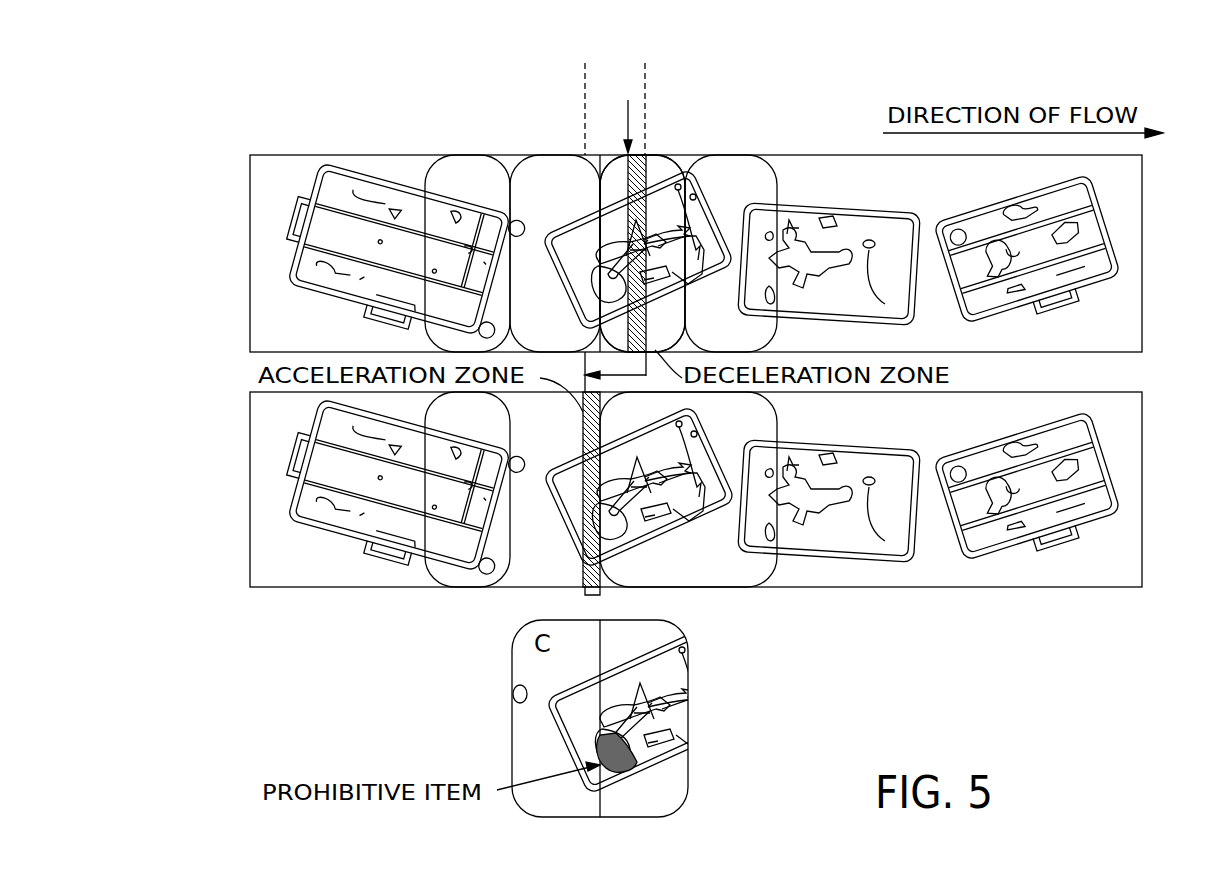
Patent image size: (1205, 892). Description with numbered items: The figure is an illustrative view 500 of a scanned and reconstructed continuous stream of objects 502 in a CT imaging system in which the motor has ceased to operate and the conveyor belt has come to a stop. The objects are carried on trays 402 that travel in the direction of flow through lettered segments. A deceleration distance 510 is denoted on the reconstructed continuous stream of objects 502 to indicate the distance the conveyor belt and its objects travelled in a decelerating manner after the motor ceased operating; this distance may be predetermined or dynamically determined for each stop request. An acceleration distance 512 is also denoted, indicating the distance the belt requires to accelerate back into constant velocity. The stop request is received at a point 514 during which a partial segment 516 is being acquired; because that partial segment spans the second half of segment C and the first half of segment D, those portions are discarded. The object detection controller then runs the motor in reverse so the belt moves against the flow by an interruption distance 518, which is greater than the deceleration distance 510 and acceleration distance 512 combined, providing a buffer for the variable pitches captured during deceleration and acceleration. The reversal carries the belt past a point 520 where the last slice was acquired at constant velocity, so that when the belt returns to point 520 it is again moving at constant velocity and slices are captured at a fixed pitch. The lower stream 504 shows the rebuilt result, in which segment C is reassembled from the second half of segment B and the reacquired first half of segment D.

The tray 402 is at (420, 172).
The illustrative view 500 is at (1108, 84).
The scanned and reconstructed continuous stream of objects 502 is at (238, 155).
The second conveyor state 504 is at (238, 392).
The deceleration distance 510 is at (637, 153).
The acceleration distance 512 is at (597, 593).
The point 514 is at (620, 111).
The partial segment 516 is at (680, 165).
The interruption distance 518 is at (645, 72).
The point 520 is at (600, 156).